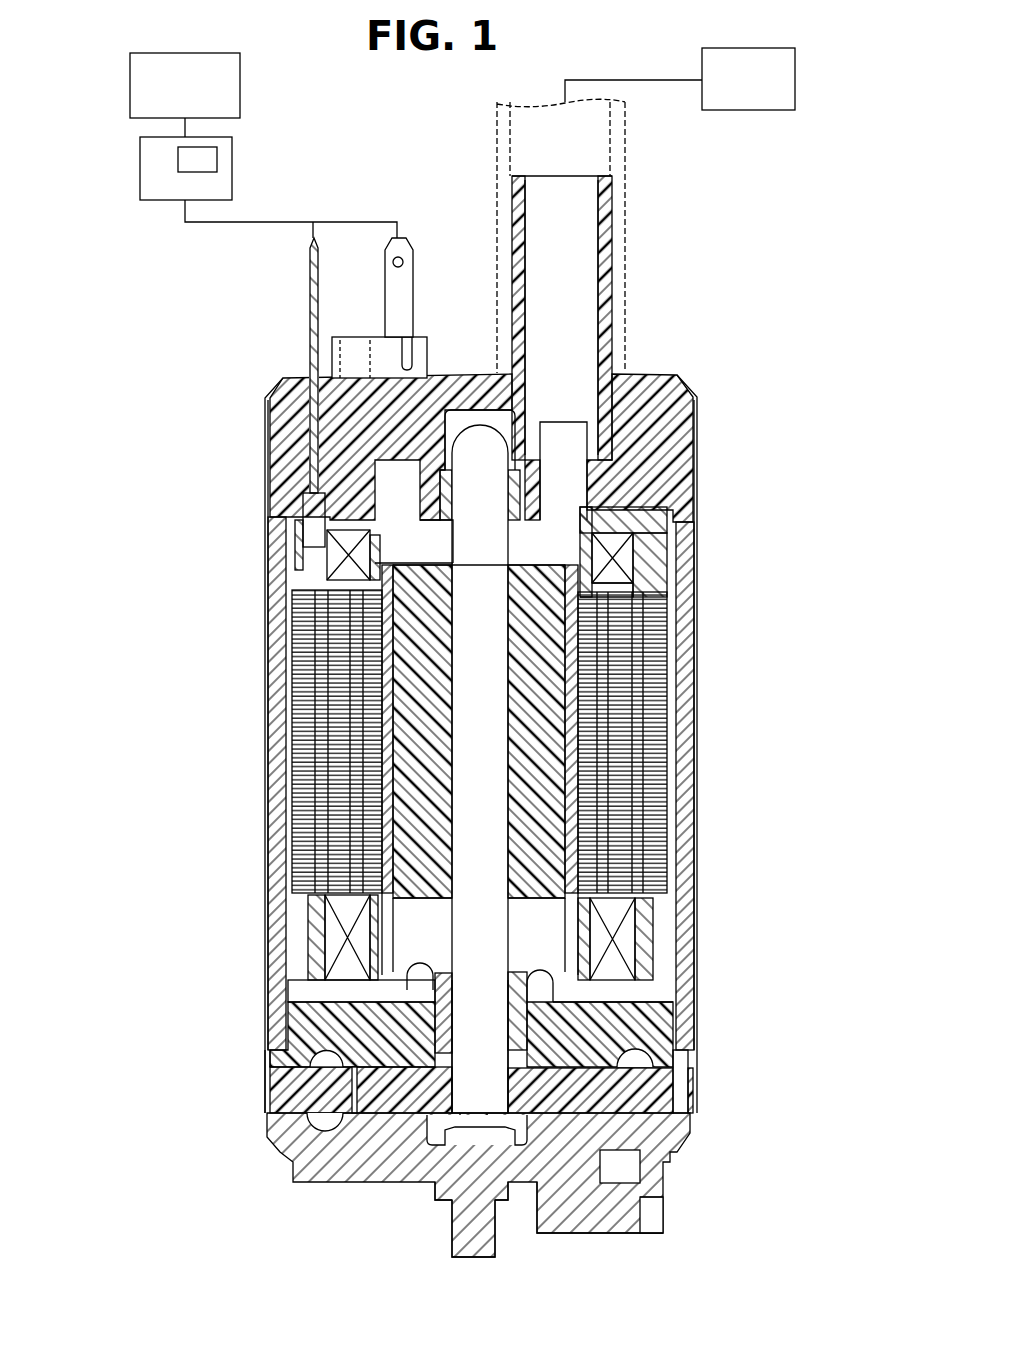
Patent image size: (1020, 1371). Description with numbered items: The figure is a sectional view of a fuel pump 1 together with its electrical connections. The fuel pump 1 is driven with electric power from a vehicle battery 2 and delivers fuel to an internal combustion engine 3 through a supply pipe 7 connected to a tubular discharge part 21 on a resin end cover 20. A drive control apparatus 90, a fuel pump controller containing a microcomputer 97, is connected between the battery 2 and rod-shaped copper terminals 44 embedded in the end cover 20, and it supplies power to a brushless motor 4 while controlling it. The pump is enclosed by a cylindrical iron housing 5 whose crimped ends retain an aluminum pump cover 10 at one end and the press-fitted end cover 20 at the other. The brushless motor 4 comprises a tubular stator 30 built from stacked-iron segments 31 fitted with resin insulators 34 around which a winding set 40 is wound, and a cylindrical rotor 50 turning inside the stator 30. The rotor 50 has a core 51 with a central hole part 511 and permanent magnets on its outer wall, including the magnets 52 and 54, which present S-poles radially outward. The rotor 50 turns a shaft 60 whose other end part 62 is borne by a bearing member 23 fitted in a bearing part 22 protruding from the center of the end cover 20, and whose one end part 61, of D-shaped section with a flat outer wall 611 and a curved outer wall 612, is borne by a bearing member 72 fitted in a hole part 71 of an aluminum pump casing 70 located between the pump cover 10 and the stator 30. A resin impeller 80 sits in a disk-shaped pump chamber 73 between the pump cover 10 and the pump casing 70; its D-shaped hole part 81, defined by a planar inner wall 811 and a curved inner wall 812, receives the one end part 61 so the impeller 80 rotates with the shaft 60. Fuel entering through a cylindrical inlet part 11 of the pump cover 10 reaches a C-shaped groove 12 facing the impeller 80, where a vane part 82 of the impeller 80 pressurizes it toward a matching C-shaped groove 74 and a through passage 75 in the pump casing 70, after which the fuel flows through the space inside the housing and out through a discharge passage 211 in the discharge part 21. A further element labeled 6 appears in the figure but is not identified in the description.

The fuel pump 1 is at (366, 120).
The battery 2 is at (130, 96).
The internal combustion engine 3 is at (795, 82).
The brushless motor 4 is at (705, 625).
The housing 5 is at (265, 822).
The brush unit 6 is at (300, 545).
The supply pipe 7 is at (625, 118).
The pump cover 10 is at (340, 1175).
The inlet part 11 is at (585, 1235).
The groove 12 is at (297, 1165).
The end cover 20 is at (265, 415).
The discharge part 21 is at (612, 250).
The discharge passage 211 is at (592, 212).
The bearing part 22 is at (525, 497).
The bearing member 23 is at (587, 507).
The stator 30 is at (262, 655).
The segment 31 is at (285, 690).
The insulator 34 is at (300, 905).
The winding set 40 is at (330, 935).
The terminal 44 is at (310, 280).
The rotor 50 is at (620, 705).
The core 51 is at (565, 725).
The hole part 511 is at (495, 745).
The permanent magnet 52 is at (290, 778).
The permanent magnet 54 is at (565, 790).
The shaft 60 is at (495, 835).
The one end part 61 is at (460, 1138).
The outer wall 611 is at (425, 1150).
The outer wall 612 is at (488, 1130).
The other end part 62 is at (481, 440).
The pump casing 70 is at (290, 1020).
The hole part 71 is at (440, 975).
The bearing member 72 is at (430, 990).
The pump chamber 73 is at (330, 1100).
The groove 74 is at (283, 1075).
The passage 75 is at (325, 1052).
The impeller 80 is at (690, 1098).
The hole part 81 is at (492, 1150).
The inner wall 811 is at (462, 1108).
The inner wall 812 is at (496, 1110).
The vane part 82 is at (665, 1060).
The drive control apparatus 90 is at (140, 175).
The microcomputer 97 is at (205, 157).